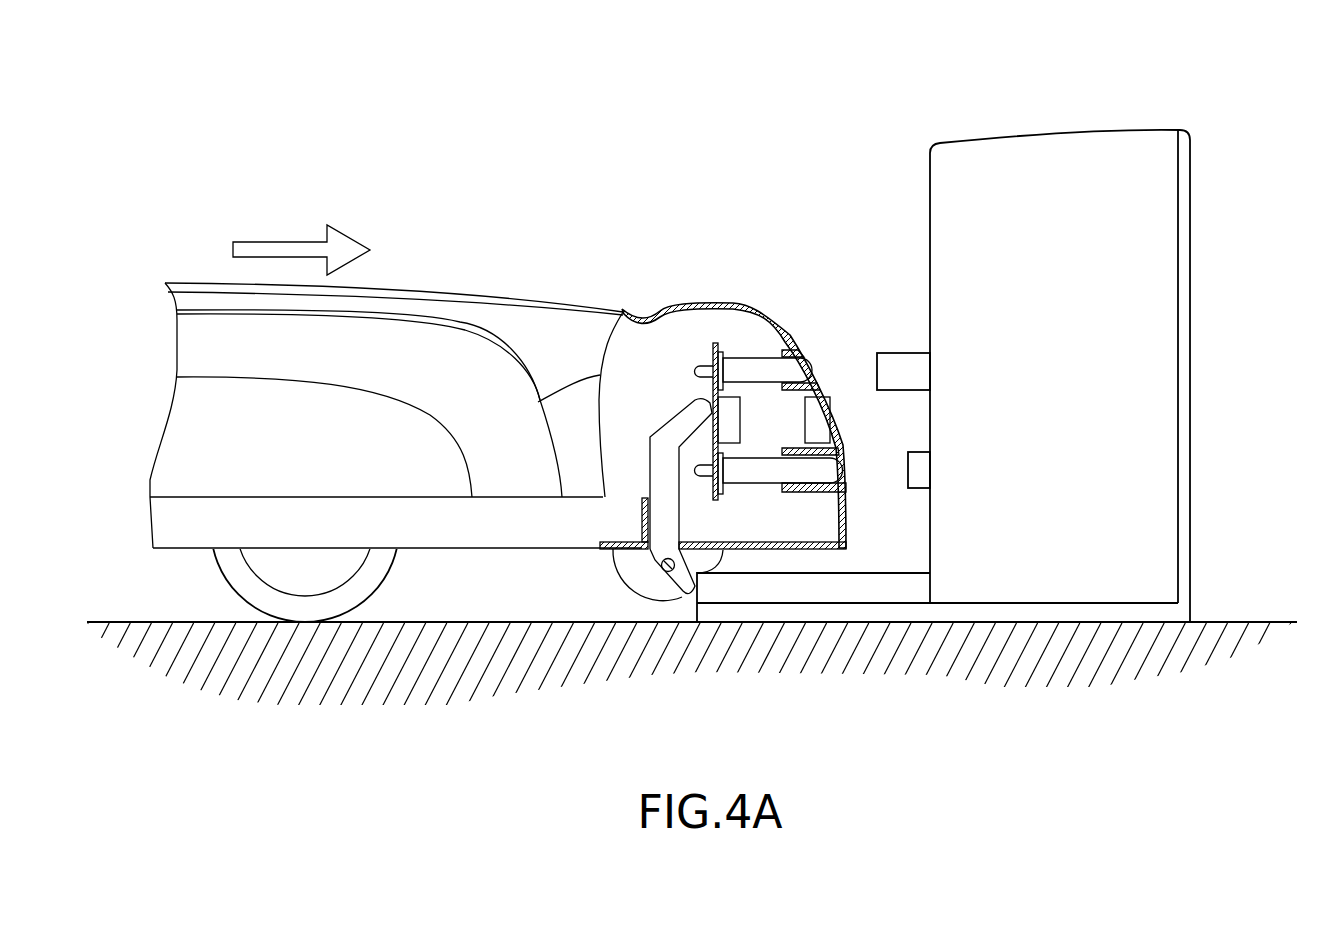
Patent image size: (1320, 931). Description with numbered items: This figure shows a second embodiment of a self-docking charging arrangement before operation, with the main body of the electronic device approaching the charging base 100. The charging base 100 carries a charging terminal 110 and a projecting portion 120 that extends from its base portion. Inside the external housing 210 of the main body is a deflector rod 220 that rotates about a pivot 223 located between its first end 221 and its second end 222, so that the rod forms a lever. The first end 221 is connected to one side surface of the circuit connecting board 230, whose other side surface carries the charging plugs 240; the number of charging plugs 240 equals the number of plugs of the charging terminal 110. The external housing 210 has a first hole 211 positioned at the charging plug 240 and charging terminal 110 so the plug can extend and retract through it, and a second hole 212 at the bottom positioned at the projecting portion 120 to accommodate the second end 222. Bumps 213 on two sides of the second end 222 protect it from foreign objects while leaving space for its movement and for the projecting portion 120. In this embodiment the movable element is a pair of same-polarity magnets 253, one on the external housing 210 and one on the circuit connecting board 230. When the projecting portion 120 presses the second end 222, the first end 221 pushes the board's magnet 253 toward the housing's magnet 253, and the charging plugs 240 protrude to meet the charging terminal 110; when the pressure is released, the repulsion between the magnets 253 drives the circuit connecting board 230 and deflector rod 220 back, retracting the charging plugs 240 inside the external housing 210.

The charging base 100 is at (1129, 118).
The charging terminal 110 is at (912, 466).
The projecting portion 120 is at (850, 592).
The external housing 210 is at (203, 275).
The first hole 211 is at (821, 380).
The second hole 212 is at (688, 546).
The bump 213 is at (637, 575).
The deflector rod 220 is at (640, 469).
The first end 221 is at (698, 408).
The second end 222 is at (681, 588).
The pivot 223 is at (663, 573).
The circuit connecting board 230 is at (713, 359).
The charging plug 240 is at (772, 370).
The magnet 253 is at (812, 421).